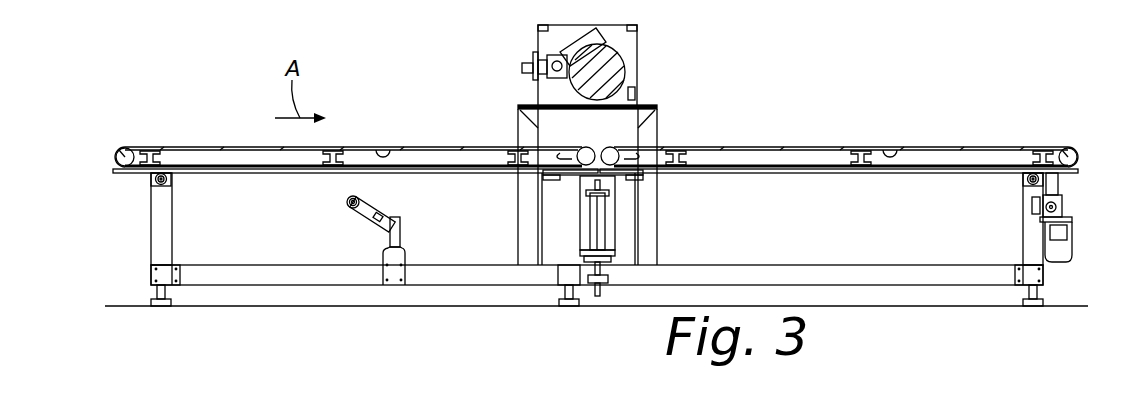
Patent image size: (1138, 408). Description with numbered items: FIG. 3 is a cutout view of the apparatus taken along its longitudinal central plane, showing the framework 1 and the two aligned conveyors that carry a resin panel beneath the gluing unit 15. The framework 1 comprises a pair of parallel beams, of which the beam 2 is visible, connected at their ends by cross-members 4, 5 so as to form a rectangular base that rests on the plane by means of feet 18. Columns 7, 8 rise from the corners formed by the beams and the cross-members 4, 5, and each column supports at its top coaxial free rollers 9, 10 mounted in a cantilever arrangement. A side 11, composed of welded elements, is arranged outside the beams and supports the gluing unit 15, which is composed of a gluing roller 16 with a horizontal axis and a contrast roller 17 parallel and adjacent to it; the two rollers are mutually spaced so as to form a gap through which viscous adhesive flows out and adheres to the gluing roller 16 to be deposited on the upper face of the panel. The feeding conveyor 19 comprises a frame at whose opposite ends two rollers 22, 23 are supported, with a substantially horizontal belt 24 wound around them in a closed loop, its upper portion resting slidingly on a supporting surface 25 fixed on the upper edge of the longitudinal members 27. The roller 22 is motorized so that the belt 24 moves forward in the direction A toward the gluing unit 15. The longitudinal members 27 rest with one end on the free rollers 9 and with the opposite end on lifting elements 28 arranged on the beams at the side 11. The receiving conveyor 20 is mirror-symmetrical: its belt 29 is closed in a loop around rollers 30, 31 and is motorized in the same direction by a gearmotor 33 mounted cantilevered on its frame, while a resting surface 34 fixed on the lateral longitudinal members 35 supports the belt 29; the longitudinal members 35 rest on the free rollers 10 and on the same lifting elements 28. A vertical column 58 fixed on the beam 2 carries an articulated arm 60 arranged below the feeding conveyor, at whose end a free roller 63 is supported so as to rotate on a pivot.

The framework 1 is at (906, 290).
The beam 2 is at (272, 288).
The cross-member 4 is at (165, 276).
The cross-member 5 is at (1030, 276).
The column 7 is at (160, 228).
The column 8 is at (1031, 243).
The free rollers 9 is at (152, 178).
The free rollers 10 is at (1027, 178).
The side 11 is at (646, 218).
The gluing unit 15 is at (603, 62).
The gluing roller 16 is at (612, 58).
The contrast roller 17 is at (548, 90).
The feet 18 is at (165, 308).
The feeding conveyor 19 is at (351, 142).
The receiving conveyor 20 is at (841, 140).
The roller 22 is at (121, 146).
The roller 23 is at (584, 148).
The belt 24 is at (222, 146).
The supporting surface 25 is at (383, 148).
The longitudinal members 27 is at (243, 174).
The lifting elements 28 is at (572, 225).
The belt 29 is at (775, 146).
The roller 30 is at (612, 149).
The roller 31 is at (1072, 146).
The gearmotor 33 is at (1075, 245).
The resting surface 34 is at (889, 158).
The longitudinal members 35 is at (805, 174).
The vertical column 58 is at (390, 237).
The arm 60 is at (360, 206).
The free rollers 63 is at (346, 200).